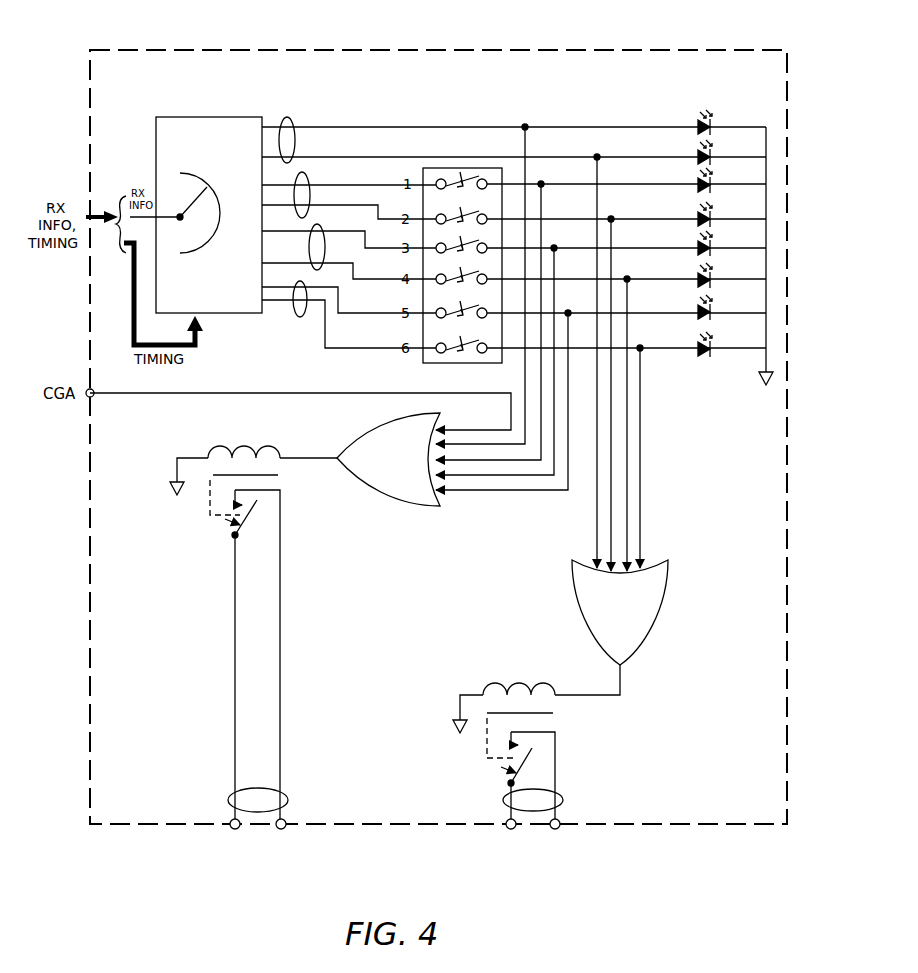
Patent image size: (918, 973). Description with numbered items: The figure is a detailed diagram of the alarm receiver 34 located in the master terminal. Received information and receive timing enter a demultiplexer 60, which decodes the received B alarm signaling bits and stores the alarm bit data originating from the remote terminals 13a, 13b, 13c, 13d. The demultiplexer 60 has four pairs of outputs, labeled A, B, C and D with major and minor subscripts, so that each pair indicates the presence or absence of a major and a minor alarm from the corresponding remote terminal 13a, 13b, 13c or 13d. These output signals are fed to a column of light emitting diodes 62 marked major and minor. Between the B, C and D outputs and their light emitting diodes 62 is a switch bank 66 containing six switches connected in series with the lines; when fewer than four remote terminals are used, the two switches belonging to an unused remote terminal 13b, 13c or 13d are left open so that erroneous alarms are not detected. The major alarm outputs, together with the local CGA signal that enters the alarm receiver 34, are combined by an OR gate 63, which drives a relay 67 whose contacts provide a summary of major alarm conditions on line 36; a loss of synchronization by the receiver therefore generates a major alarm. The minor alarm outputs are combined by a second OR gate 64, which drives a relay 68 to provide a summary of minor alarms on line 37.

The alarm receiver 34 is at (655, 50).
The demultiplexer 60 is at (183, 117).
The remote terminal 13a is at (290, 118).
The remote terminal 13b is at (304, 172).
The remote terminal 13c is at (318, 224).
The remote terminal 13d is at (299, 317).
The switch bank 66 is at (428, 363).
The light emitting diodes 62 is at (724, 362).
The OR gate 63 is at (388, 459).
The OR gate 64 is at (620, 612).
The relay 67 is at (240, 435).
The relay 68 is at (522, 683).
The line 36 is at (231, 797).
The line 37 is at (507, 797).